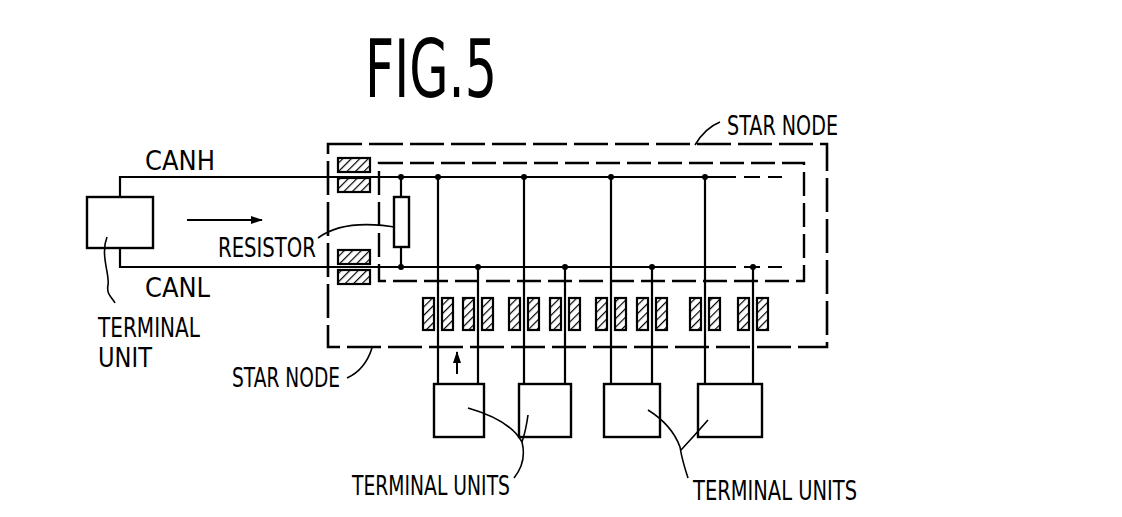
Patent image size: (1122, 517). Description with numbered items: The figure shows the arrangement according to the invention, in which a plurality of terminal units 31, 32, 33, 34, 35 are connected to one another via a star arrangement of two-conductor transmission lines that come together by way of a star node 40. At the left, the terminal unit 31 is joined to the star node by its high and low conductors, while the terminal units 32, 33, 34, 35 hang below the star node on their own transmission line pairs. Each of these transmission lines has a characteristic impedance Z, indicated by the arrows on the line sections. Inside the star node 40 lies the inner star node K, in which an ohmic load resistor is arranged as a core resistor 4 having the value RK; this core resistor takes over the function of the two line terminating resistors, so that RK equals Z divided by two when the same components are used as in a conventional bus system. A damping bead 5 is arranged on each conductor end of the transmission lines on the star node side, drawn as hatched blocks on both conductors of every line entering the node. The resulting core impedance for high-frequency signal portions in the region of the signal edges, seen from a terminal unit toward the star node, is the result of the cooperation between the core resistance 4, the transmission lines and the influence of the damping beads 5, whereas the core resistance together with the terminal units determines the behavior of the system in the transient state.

The terminal unit 31 is at (110, 210).
The terminal unit 32 is at (456, 427).
The terminal unit 33 is at (543, 427).
The terminal unit 34 is at (635, 427).
The terminal unit 35 is at (740, 427).
The core resistor 4 is at (404, 228).
The damping bead 5 is at (363, 284).
The star node 40 is at (328, 303).
The star node K is at (635, 162).
The characteristic impedance Z is at (212, 217).